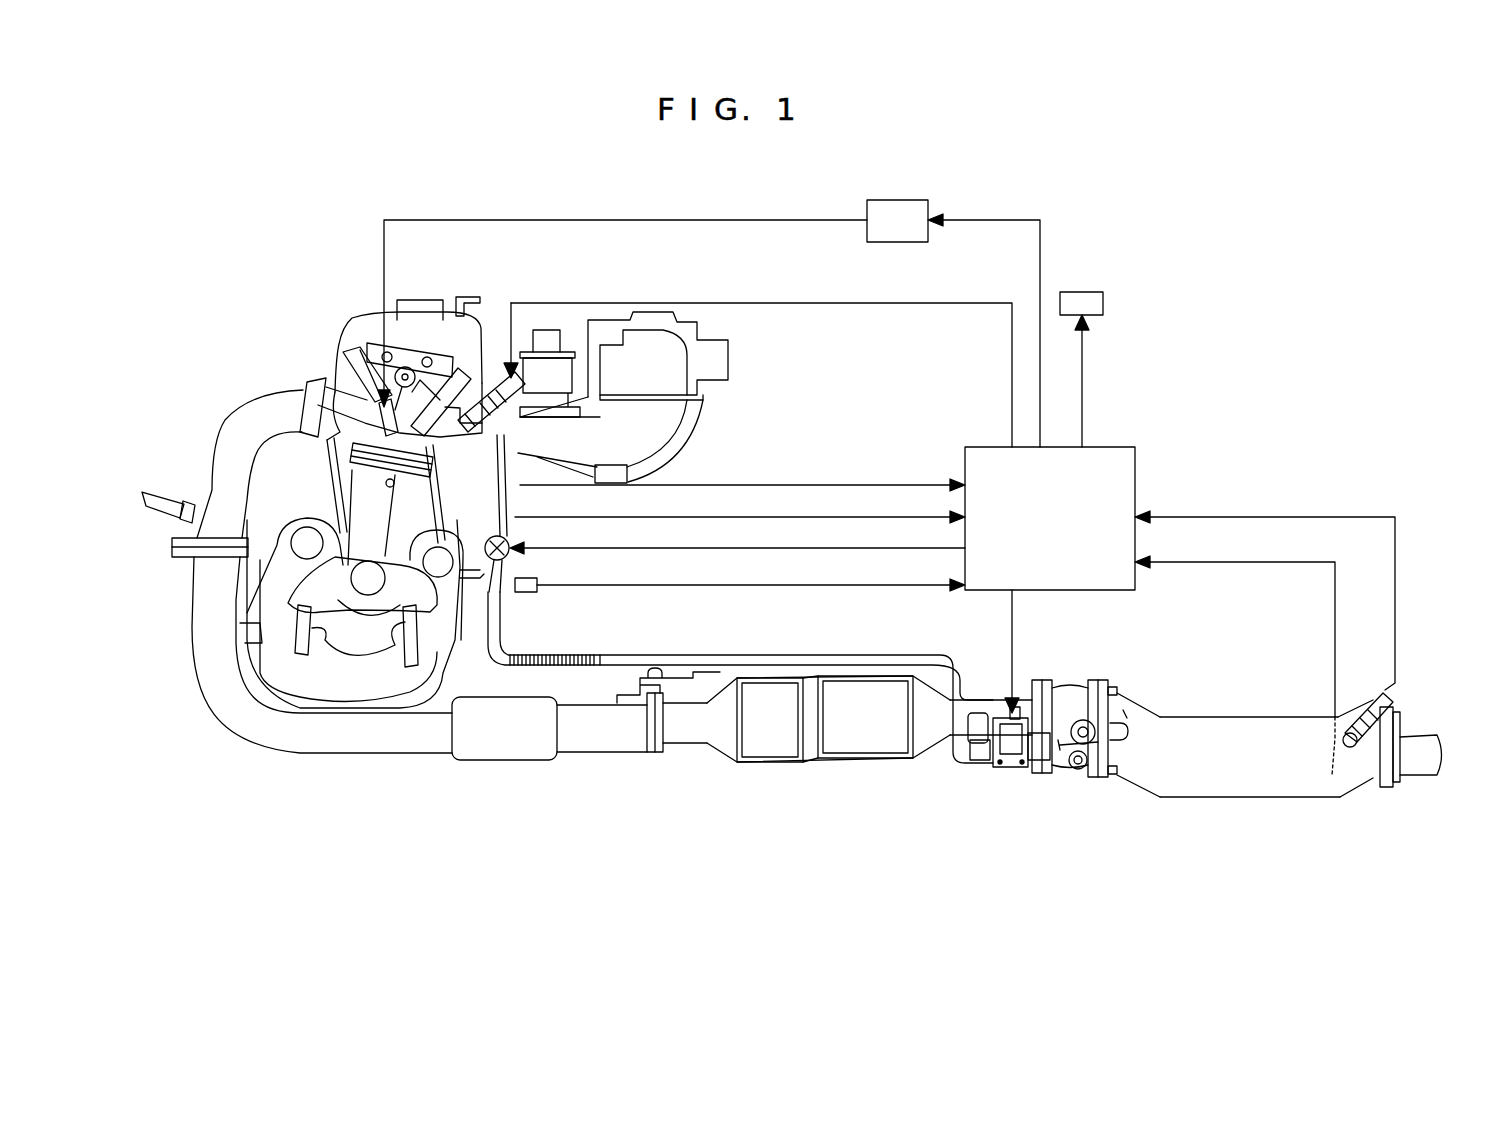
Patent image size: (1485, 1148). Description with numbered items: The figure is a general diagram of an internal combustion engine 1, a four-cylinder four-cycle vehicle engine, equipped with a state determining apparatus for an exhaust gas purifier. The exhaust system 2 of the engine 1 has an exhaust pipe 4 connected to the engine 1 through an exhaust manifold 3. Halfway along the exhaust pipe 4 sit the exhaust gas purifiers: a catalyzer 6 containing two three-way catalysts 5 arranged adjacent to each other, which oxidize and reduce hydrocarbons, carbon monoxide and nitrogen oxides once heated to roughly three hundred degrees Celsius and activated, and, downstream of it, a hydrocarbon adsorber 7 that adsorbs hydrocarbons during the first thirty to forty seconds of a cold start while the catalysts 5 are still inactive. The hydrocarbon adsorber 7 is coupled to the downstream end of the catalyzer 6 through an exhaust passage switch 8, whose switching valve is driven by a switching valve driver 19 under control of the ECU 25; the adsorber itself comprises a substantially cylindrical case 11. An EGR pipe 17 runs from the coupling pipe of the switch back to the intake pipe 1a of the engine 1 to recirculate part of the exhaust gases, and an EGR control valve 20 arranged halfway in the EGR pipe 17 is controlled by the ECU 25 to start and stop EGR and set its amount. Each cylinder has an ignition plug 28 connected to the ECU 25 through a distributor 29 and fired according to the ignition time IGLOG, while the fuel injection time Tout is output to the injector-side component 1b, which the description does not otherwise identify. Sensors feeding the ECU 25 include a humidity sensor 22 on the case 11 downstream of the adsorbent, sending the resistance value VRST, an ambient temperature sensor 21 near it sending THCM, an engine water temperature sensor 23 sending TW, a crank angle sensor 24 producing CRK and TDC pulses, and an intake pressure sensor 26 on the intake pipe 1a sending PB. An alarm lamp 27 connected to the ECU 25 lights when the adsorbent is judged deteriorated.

The internal combustion engine 1 is at (338, 270).
The intake pipe 1a is at (580, 443).
The fuel injector 1b is at (493, 376).
The exhaust system 2 is at (366, 814).
The exhaust manifold 3 is at (312, 385).
The exhaust pipe 4 is at (263, 745).
The three-way catalysts 5 is at (840, 745).
The catalyzer 6 is at (776, 795).
The hydrocarbon adsorber 7 is at (1227, 684).
The exhaust passage switch 8 is at (1074, 682).
The case 11 is at (1275, 716).
The EGR pipe 17 is at (966, 772).
The switching valve driver 19 is at (1018, 780).
The EGR control valve 20 is at (588, 585).
The ambient temperature sensor 21 is at (1330, 778).
The humidity sensor 22 is at (1365, 778).
The engine water temperature sensor 23 is at (383, 475).
The crank angle sensor 24 is at (537, 592).
The ECU 25 is at (1120, 447).
The intake pressure sensor 26 is at (503, 462).
The alarm lamp 27 is at (1080, 292).
The ignition plug 28 is at (343, 375).
The distributor 29 is at (898, 200).